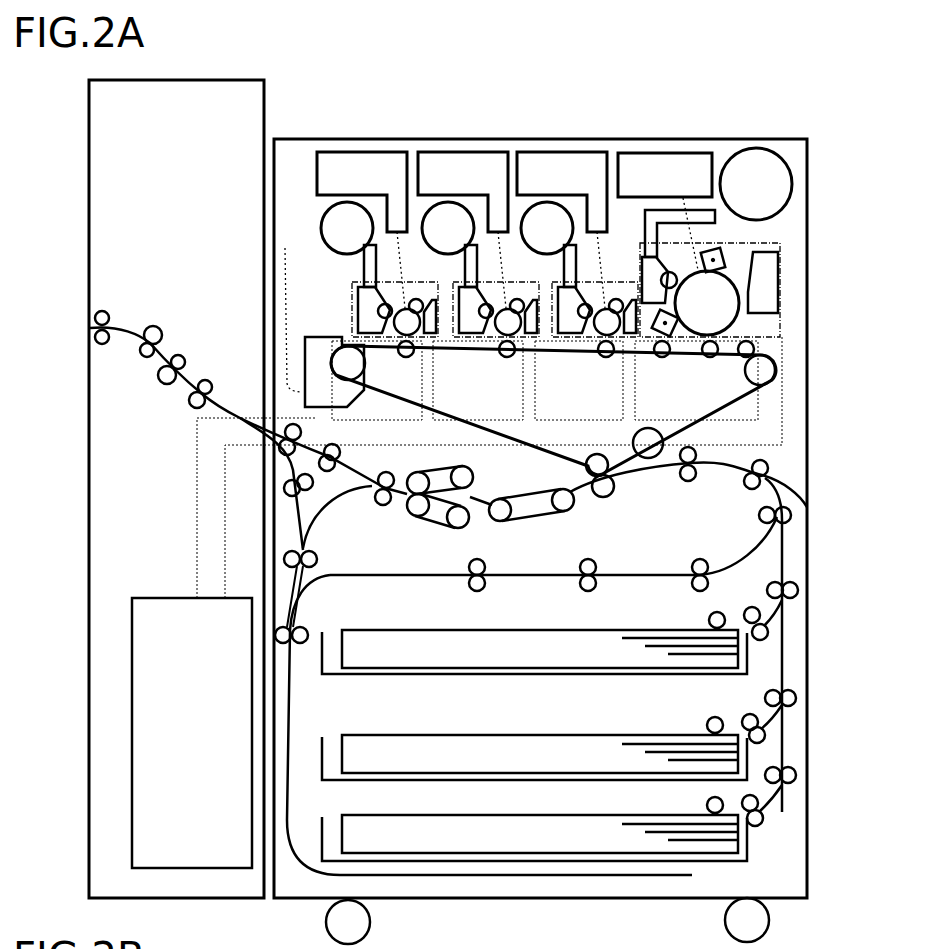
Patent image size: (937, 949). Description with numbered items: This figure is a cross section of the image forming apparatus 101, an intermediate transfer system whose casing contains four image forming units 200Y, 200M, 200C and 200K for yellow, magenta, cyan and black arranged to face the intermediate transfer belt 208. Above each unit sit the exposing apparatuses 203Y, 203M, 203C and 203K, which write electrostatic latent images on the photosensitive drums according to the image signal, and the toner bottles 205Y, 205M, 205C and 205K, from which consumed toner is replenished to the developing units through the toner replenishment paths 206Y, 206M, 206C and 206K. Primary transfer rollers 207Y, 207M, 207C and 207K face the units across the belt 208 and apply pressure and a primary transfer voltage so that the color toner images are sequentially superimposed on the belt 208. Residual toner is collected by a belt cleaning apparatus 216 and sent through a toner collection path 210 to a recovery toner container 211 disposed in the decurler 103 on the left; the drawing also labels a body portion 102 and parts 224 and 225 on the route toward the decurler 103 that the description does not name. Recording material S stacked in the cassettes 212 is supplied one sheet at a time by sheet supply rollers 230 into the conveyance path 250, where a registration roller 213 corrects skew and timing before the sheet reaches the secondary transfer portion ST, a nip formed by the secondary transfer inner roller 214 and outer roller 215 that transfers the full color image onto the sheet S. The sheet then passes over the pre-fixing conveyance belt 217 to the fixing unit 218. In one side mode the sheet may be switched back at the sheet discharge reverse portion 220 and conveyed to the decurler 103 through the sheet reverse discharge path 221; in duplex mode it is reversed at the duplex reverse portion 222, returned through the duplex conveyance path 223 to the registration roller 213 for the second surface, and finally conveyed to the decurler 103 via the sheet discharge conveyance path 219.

The image forming apparatus 101 is at (808, 90).
The apparatus main body 102 is at (807, 148).
The decurler 103 is at (89, 115).
The image forming unit 200Y is at (352, 320).
The image forming unit 200M is at (450, 337).
The image forming unit 200C is at (552, 337).
The image forming unit 200K is at (780, 250).
The exposing apparatus 203Y is at (385, 152).
The exposing apparatus 203M is at (492, 152).
The exposing apparatus 203C is at (595, 152).
The exposing unit 203K is at (655, 153).
The toner bottle (yellow) 205Y is at (348, 202).
The toner bottle (magenta) 205M is at (447, 202).
The toner bottle (cyan) 205C is at (548, 202).
The toner bottle 205K is at (756, 148).
The toner supply path (yellow) 206Y is at (364, 272).
The toner supply path (magenta) 206M is at (465, 272).
The toner supply path (cyan) 206C is at (565, 272).
The toner replenishment path 206K is at (715, 210).
The primary transfer roller (yellow) 207Y is at (405, 357).
The primary transfer roller (magenta) 207M is at (506, 357).
The primary transfer roller (cyan) 207C is at (606, 357).
The primary transfer roller 207K is at (710, 357).
The intermediate transfer belt 208 is at (750, 392).
The toner collection path 210 is at (195, 563).
The recovery toner container 211 is at (132, 618).
The cassette 212 is at (322, 658).
The registration roller 213 is at (695, 454).
The secondary transfer inner roller 214 is at (615, 480).
The secondary transfer outer roller 215 is at (605, 497).
The belt cleaning apparatus 216 is at (322, 314).
The pre-fixing conveyance belt 217 is at (535, 516).
The fixing unit 218 is at (435, 520).
The sheet discharge conveyance path 219 is at (366, 480).
The sheet discharge reverse portion 220 is at (303, 548).
The sheet reverse discharge path 221 is at (300, 505).
The duplex reverse portion 222 is at (296, 626).
The duplex conveyance path 223 is at (518, 580).
The conveyance roller pair 224 is at (183, 358).
The discharge path 225 is at (160, 327).
The sheet supply roller 230 is at (768, 630).
The conveyance path 250 is at (730, 470).
The recording material S is at (425, 630).
The secondary transfer portion ST is at (590, 474).